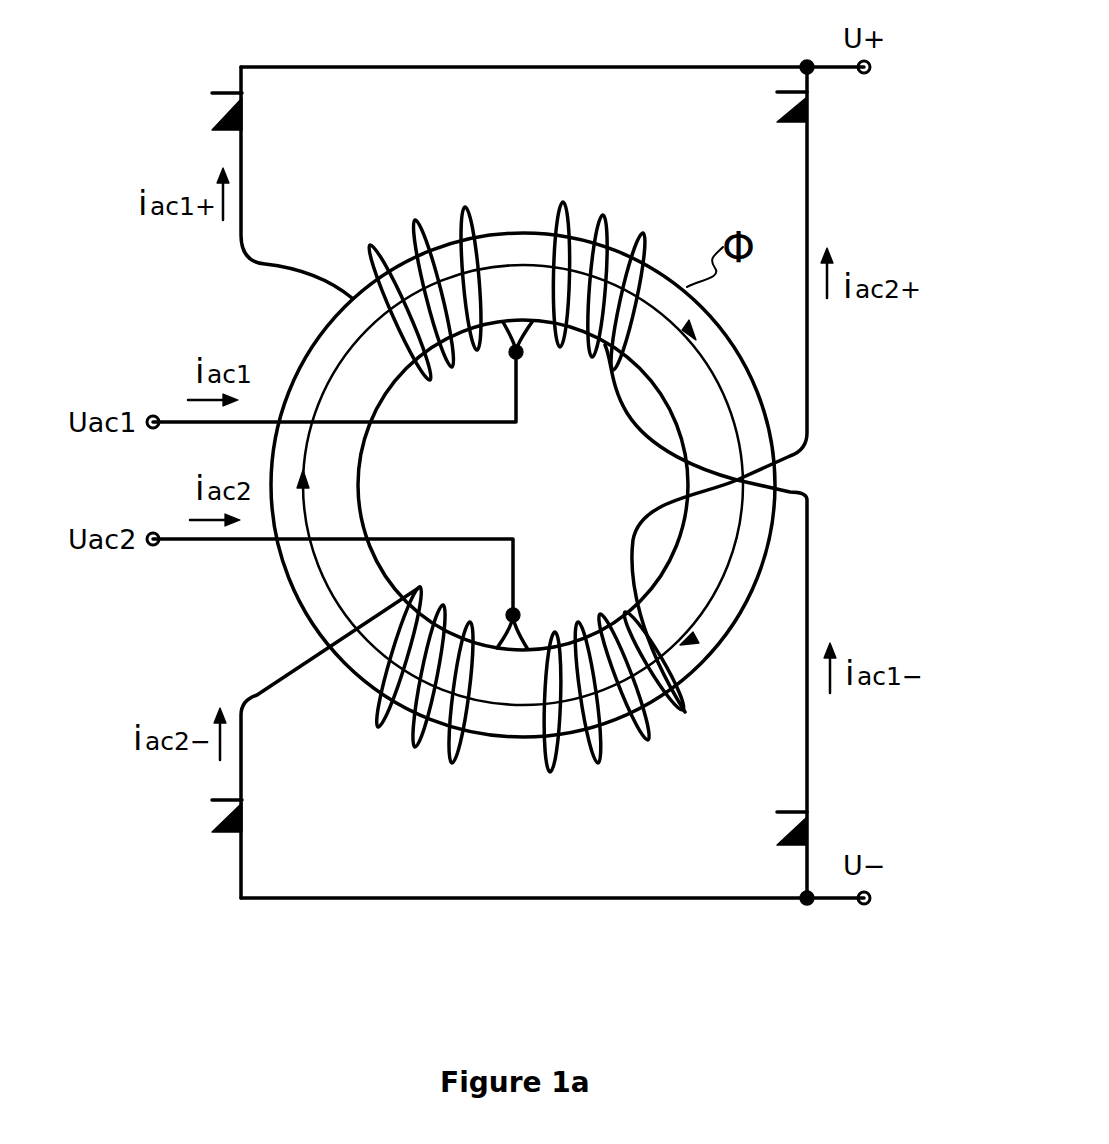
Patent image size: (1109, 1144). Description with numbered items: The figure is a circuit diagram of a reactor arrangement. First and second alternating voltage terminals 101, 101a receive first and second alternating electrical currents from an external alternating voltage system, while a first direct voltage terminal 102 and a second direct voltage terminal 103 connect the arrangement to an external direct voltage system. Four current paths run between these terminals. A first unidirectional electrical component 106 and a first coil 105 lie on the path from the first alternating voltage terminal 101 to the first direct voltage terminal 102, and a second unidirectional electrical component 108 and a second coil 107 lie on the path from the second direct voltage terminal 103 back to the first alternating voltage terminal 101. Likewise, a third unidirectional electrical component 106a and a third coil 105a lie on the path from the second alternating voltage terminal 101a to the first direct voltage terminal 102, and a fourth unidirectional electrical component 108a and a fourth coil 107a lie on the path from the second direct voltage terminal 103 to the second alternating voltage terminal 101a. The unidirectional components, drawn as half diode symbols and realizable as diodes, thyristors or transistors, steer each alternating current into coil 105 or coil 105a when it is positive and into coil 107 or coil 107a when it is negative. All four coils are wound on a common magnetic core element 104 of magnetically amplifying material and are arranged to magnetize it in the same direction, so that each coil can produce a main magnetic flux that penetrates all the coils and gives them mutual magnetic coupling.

The first alternating voltage terminal 101 is at (153, 414).
The second alternating voltage terminal 101a is at (153, 547).
The first direct voltage terminal 102 is at (864, 75).
The second direct voltage terminal 103 is at (864, 906).
The magnetic core element 104 is at (363, 487).
The first coil 105 is at (460, 194).
The third coil 105a is at (657, 735).
The first unidirectional electrical component 106 is at (213, 108).
The third unidirectional electrical component 106a is at (777, 98).
The second coil 107 is at (661, 222).
The fourth coil 107a is at (457, 771).
The second unidirectional electrical component 108 is at (777, 831).
The fourth unidirectional electrical component 108a is at (213, 808).